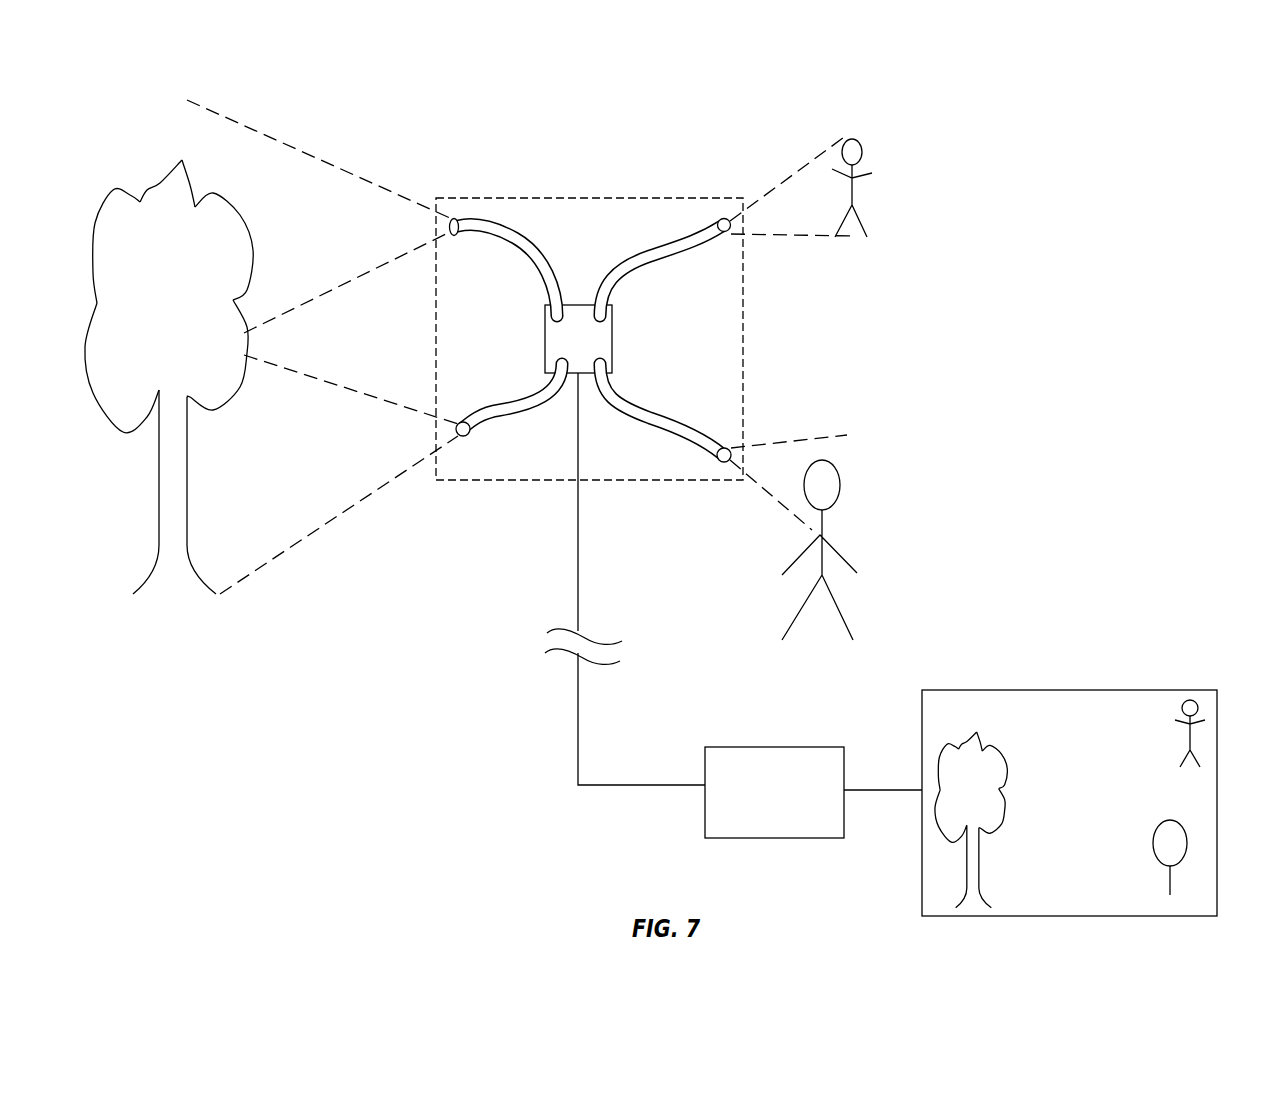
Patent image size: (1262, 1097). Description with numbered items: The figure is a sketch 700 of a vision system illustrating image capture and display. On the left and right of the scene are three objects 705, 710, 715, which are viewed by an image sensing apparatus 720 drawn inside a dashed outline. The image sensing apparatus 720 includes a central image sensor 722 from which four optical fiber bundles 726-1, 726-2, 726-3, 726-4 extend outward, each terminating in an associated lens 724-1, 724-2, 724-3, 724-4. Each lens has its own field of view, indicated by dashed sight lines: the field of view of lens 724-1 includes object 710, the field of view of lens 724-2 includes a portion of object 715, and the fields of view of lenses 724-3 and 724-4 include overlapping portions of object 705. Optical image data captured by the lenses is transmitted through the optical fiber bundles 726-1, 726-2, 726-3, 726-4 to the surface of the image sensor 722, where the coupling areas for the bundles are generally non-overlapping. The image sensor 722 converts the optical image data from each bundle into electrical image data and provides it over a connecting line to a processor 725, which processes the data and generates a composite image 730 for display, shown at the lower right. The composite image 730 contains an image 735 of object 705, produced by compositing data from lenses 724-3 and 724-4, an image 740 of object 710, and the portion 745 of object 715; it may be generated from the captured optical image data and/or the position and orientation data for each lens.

The sketch 700 is at (1104, 126).
The object 705 is at (163, 168).
The object 710 is at (872, 179).
The object 715 is at (845, 517).
The image sensing apparatus 720 is at (607, 190).
The image sensor 722 is at (605, 339).
The lens 724-1 is at (725, 237).
The lens 724-2 is at (718, 465).
The lens 724-3 is at (502, 455).
The lens 724-4 is at (455, 240).
The optical fiber bundle 726-1 is at (660, 245).
The optical fiber bundle 726-2 is at (688, 417).
The optical fiber bundle 726-3 is at (525, 388).
The optical fiber bundle 726-4 is at (548, 227).
The processor 725 is at (780, 747).
The composite image 730 is at (1047, 685).
The image 735 is at (1012, 757).
The image 740 is at (1165, 748).
The portion 745 is at (1153, 875).